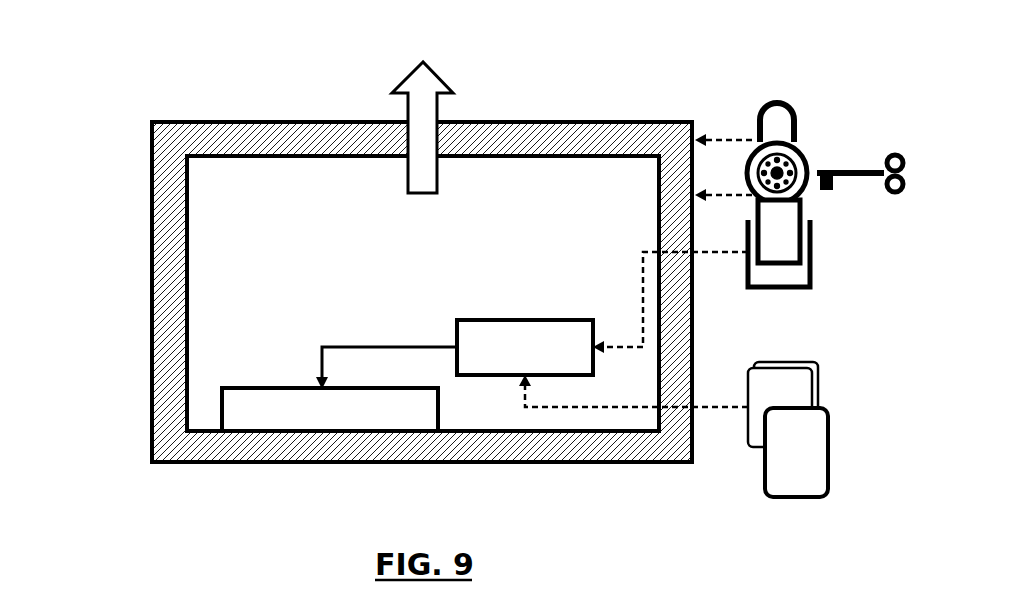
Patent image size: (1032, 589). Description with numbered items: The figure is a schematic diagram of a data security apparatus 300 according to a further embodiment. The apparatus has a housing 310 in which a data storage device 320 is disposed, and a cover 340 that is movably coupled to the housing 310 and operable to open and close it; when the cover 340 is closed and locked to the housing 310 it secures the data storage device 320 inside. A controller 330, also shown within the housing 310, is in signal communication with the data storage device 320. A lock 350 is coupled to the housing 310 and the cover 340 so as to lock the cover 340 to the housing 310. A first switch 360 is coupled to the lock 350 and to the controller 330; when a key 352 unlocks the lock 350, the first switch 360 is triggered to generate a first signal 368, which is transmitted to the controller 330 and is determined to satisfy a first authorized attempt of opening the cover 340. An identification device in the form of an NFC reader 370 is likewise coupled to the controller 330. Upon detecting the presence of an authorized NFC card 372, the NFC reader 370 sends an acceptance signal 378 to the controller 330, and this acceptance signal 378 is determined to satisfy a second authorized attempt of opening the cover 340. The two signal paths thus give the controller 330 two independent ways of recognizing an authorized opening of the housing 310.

The data security apparatus 300 is at (370, 235).
The housing 310 is at (152, 416).
The data storage device 320 is at (237, 400).
The controller 330 is at (560, 337).
The cover 340 is at (165, 122).
The lock 350 is at (801, 150).
The key 352 is at (867, 148).
The first switch 360 is at (812, 250).
The first signal 368 is at (713, 252).
The NFC reader 370 is at (812, 385).
The NFC card 372 is at (830, 462).
The acceptance signal 378 is at (720, 417).